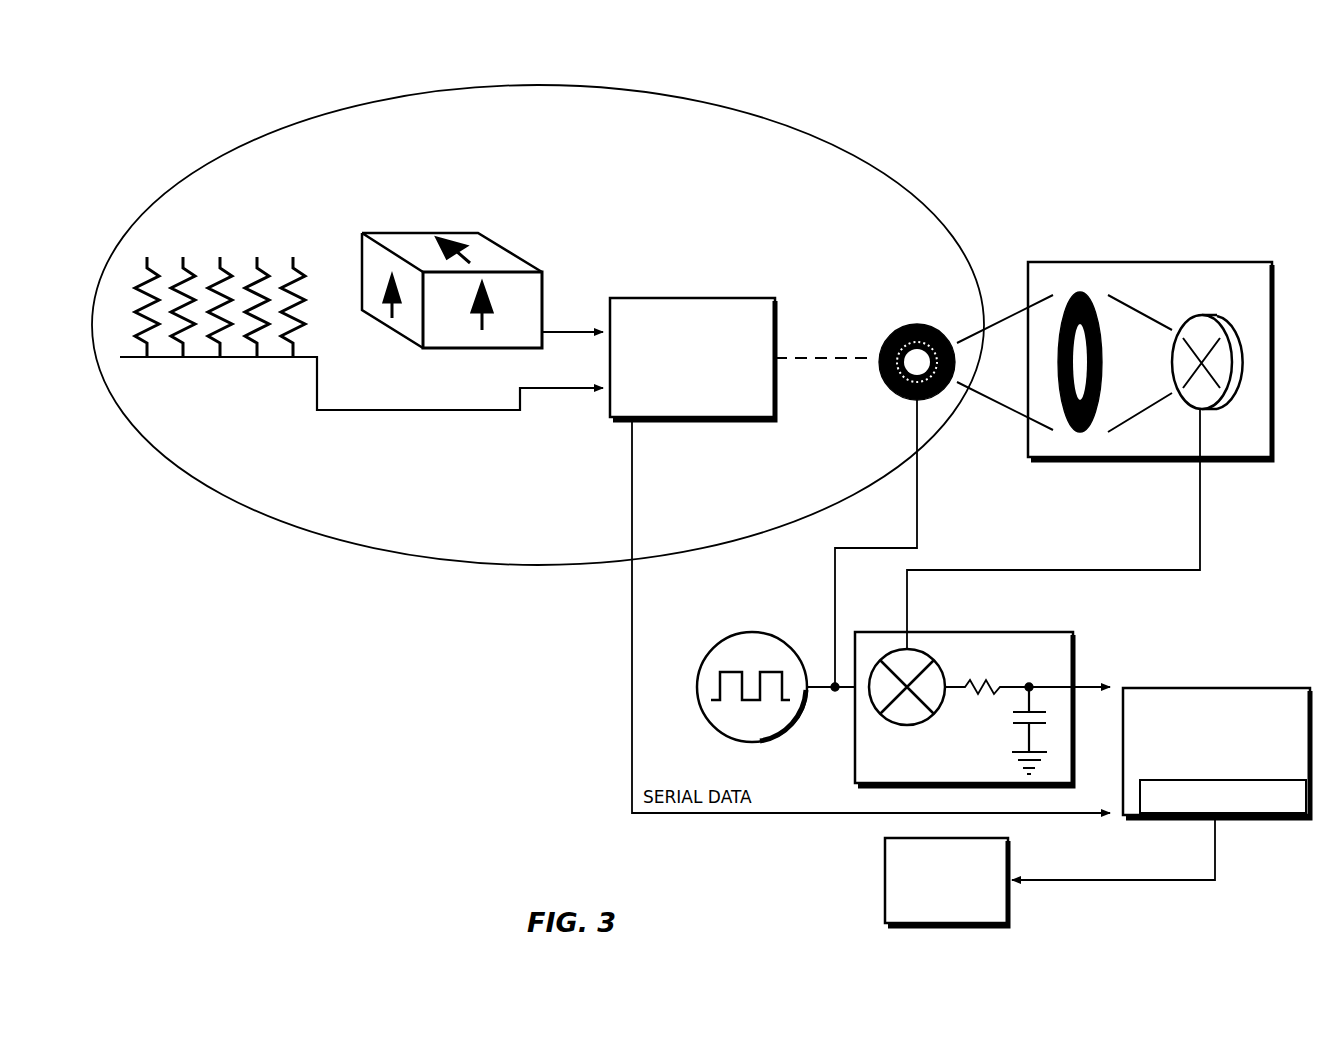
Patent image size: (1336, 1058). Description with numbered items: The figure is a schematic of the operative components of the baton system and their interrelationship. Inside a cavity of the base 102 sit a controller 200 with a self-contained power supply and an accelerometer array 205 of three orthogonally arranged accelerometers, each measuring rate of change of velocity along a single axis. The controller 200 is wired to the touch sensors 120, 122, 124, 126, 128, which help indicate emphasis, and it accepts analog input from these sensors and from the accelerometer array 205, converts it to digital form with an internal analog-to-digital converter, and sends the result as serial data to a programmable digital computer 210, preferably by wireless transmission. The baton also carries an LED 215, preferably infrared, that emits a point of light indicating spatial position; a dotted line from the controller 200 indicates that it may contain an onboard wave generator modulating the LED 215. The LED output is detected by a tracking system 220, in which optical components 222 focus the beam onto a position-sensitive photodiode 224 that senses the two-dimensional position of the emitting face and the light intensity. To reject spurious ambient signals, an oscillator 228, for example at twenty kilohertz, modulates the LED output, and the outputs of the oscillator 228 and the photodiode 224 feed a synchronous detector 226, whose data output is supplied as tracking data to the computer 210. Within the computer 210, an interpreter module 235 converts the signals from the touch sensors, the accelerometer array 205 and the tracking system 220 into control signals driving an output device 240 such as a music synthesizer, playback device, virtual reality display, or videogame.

The base 102 is at (781, 124).
The touch sensor 120 is at (146, 262).
The touch sensor 122 is at (182, 262).
The touch sensor 124 is at (219, 262).
The touch sensor 126 is at (257, 262).
The touch sensor 128 is at (296, 262).
The accelerometer array 205 is at (490, 246).
The controller 200 is at (742, 298).
The LED 215 is at (912, 322).
The tracking system 220 is at (1170, 262).
The optical components 222 is at (1075, 292).
The position-sensitive photodiode 224 is at (1248, 358).
The oscillator 228 is at (752, 632).
The synchronous detector 226 is at (1000, 632).
The programmable digital computer 210 is at (1228, 688).
The interpreter module 235 is at (1294, 813).
The output device 240 is at (885, 882).